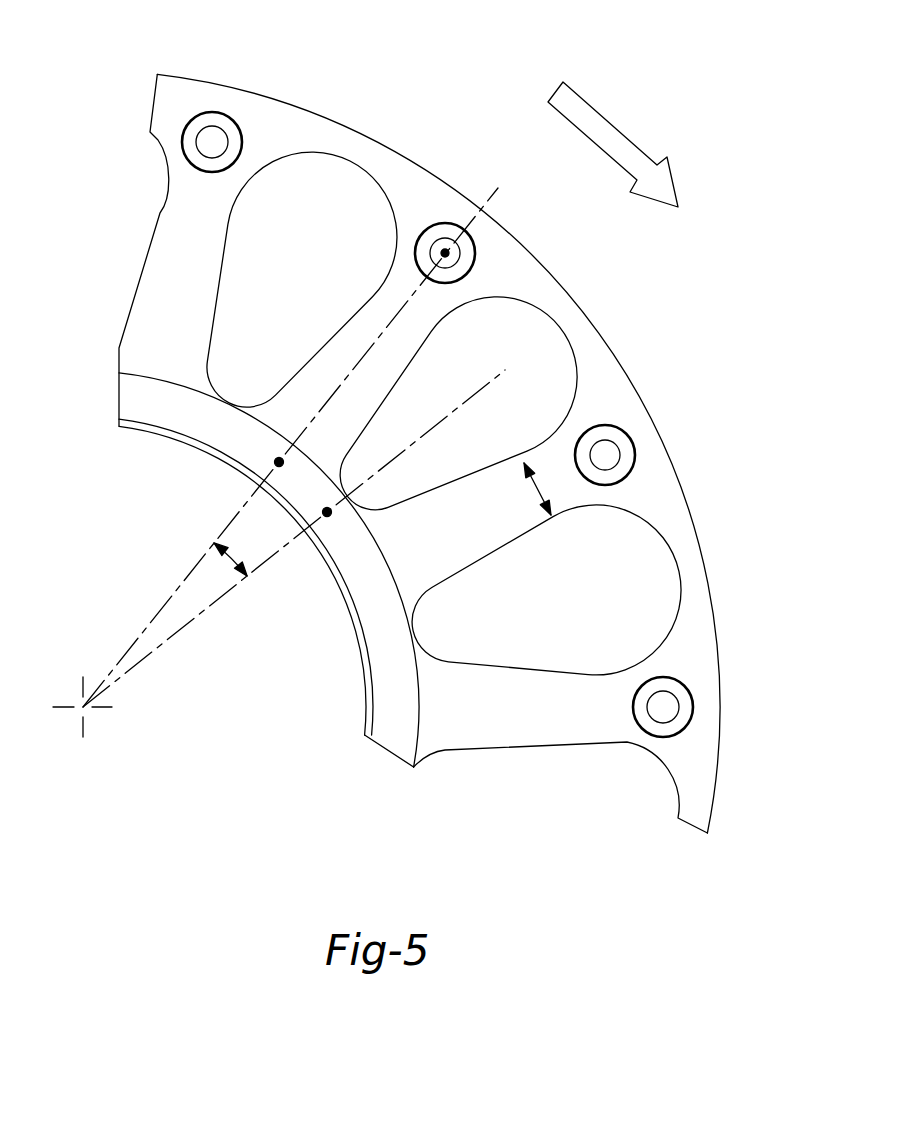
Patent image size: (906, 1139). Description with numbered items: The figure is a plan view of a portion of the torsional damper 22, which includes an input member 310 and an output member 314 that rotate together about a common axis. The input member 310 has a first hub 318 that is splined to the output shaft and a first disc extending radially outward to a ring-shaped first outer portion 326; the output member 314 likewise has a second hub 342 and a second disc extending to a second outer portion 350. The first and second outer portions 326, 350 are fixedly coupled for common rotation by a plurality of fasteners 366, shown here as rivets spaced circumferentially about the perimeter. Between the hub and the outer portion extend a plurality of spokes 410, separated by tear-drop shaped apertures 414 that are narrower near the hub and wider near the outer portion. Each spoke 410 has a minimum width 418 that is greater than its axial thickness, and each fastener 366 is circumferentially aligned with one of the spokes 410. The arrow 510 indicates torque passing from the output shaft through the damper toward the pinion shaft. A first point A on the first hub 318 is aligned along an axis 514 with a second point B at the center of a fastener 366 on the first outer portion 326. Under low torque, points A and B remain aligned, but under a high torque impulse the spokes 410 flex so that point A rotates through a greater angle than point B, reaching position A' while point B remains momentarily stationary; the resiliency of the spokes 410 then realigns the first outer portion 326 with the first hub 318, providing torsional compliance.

The torsional damper 22 is at (181, 58).
The input member 310 is at (438, 440).
The output member 314 is at (262, 90).
The first outer portion 326 is at (620, 687).
The second outer portion 350 is at (687, 570).
The first hub 318 is at (269, 570).
The second hub 342 is at (398, 712).
The fasteners 366 is at (183, 128).
The spokes 410 is at (345, 338).
The apertures 414 is at (298, 372).
The minimum width 418 is at (535, 489).
The arrow 510 is at (613, 128).
The axis 514 is at (488, 198).
The first point A is at (207, 462).
The displaced first point A' is at (294, 538).
The second point B is at (445, 253).